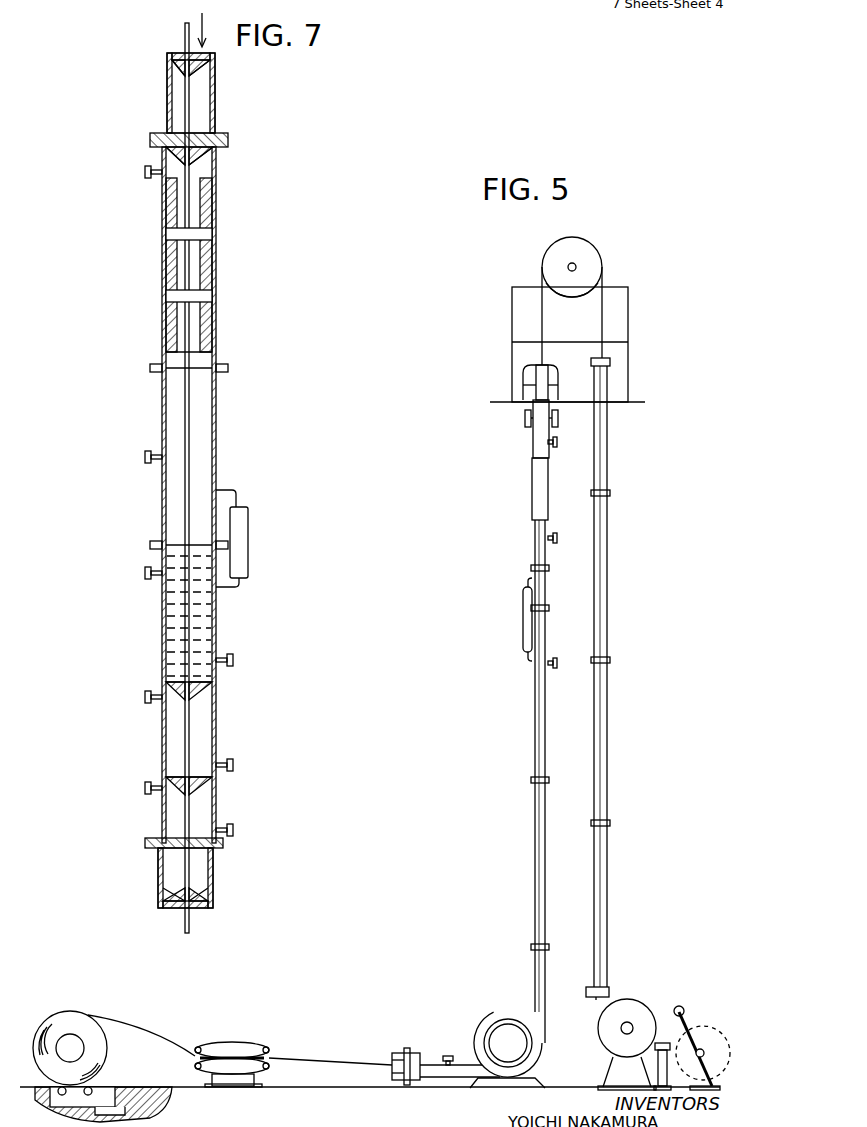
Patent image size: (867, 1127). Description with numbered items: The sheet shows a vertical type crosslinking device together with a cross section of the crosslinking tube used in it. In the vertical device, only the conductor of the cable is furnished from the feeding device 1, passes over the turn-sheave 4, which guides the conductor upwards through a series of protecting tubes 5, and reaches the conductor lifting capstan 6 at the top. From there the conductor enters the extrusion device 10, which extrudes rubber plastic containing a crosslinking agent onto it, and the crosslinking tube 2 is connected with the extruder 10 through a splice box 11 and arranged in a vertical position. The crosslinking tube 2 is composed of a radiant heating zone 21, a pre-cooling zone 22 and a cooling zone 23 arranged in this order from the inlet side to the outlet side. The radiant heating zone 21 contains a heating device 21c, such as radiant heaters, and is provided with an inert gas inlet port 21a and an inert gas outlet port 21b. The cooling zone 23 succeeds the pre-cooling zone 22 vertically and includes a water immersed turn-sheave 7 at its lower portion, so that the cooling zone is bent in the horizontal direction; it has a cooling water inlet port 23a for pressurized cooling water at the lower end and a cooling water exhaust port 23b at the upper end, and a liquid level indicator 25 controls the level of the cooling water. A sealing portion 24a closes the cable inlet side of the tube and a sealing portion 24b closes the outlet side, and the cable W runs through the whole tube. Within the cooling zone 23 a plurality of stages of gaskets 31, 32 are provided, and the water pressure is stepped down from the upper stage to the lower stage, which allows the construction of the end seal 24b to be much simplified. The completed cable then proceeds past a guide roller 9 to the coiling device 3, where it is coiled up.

In FIG. 5, the feeding device 1 is at (702, 1047).
In FIG. 7, the crosslinking tube 2 is at (189, 495).
In FIG. 5, the crosslinking tube 2 is at (510, 764).
In FIG. 5, the coiling device 3 is at (85, 1030).
In FIG. 5, the turn-sheave 4 is at (634, 1010).
In FIG. 5, the protecting tubes 5 is at (608, 727).
In FIG. 5, the conductor lifting capstan 6 is at (556, 252).
In FIG. 5, the water immersed turn-sheave 7 is at (522, 1032).
In FIG. 5, the guide roller 9 is at (222, 1046).
In FIG. 5, the extrusion device 10 is at (523, 372).
In FIG. 5, the splice box 11 is at (525, 417).
In FIG. 7, the radiant heating zone 21 is at (228, 145).
In FIG. 5, the radiant heating zone 21 is at (533, 430).
In FIG. 7, the inert gas inlet port 21a is at (148, 180).
In FIG. 5, the inert gas inlet port 21a is at (558, 441).
In FIG. 7, the inert gas outlet port 21b is at (148, 464).
In FIG. 5, the inert gas outlet port 21b is at (558, 539).
In FIG. 7, the heating device 21c is at (170, 208).
In FIG. 7, the pre-cooling zone 22 is at (289, 368).
In FIG. 5, the pre-cooling zone 22 is at (533, 608).
In FIG. 7, the cooling zone 23 is at (228, 843).
In FIG. 5, the cooling zone 23 is at (425, 1070).
In FIG. 7, the cooling water inlet port 23a is at (240, 651).
In FIG. 5, the cooling water inlet port 23a is at (448, 1056).
In FIG. 7, the cooling water exhaust port 23b is at (147, 580).
In FIG. 5, the cooling water exhaust port 23b is at (558, 664).
In FIG. 7, the sealing portion 24a is at (216, 98).
In FIG. 7, the sealing portion 24b is at (214, 880).
In FIG. 5, the sealing portion 24b is at (437, 1055).
In FIG. 7, the liquid level indicator 25 is at (240, 520).
In FIG. 5, the liquid level indicator 25 is at (523, 630).
In FIG. 7, the gasket 31 is at (205, 694).
In FIG. 7, the gasket 32 is at (175, 792).
In FIG. 7, the cable W is at (191, 407).